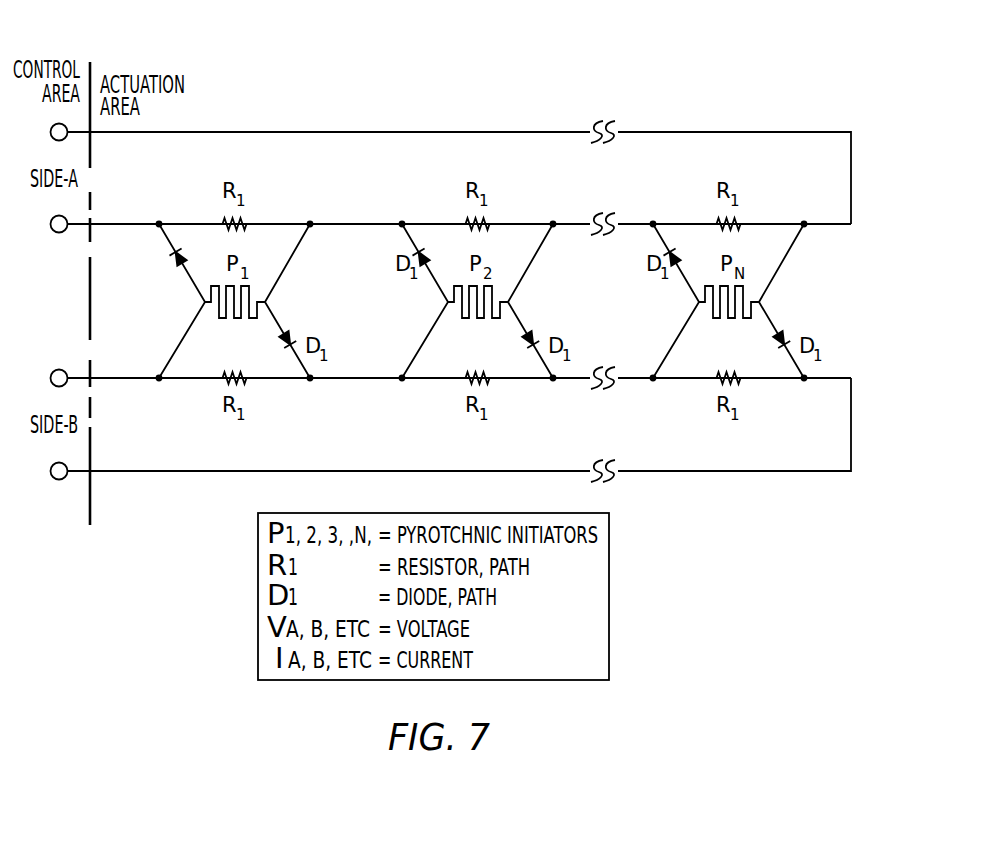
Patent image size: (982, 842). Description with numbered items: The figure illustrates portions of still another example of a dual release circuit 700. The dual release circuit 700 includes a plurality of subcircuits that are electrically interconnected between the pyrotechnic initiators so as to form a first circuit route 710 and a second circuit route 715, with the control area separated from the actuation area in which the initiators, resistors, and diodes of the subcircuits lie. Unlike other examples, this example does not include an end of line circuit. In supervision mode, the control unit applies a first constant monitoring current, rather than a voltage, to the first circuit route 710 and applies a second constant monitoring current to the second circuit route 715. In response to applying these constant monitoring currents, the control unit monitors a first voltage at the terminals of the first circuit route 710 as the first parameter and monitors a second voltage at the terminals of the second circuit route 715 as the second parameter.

The dual release circuit 700 is at (773, 51).
The first circuit route 710 is at (112, 223).
The second circuit route 715 is at (113, 380).